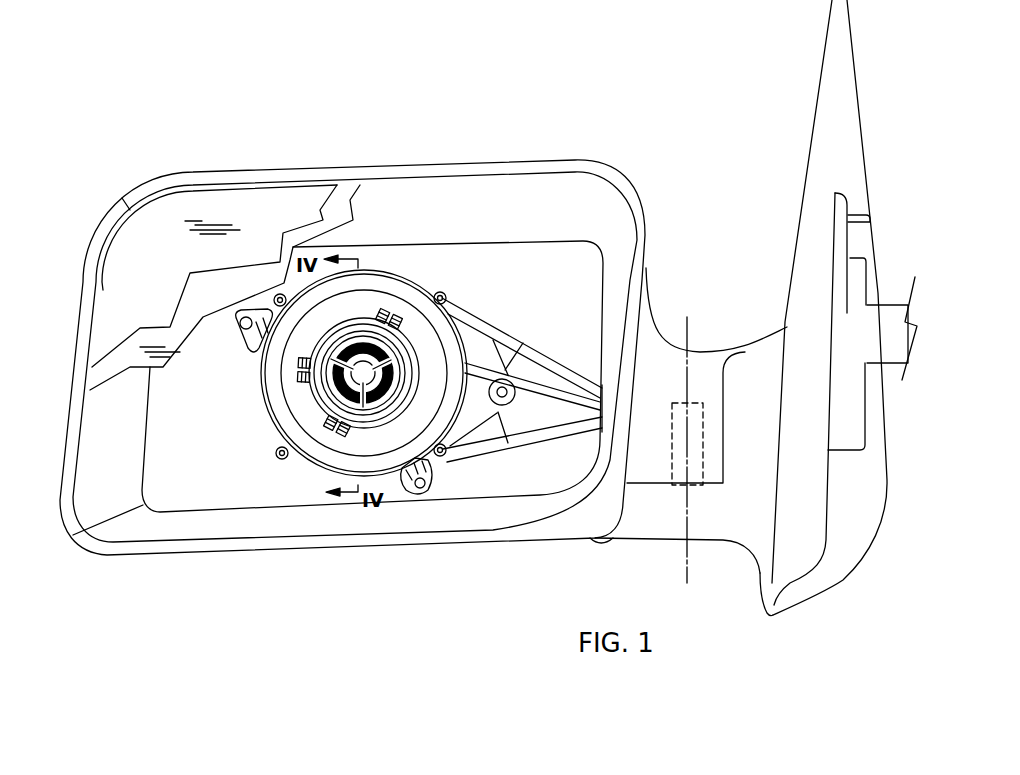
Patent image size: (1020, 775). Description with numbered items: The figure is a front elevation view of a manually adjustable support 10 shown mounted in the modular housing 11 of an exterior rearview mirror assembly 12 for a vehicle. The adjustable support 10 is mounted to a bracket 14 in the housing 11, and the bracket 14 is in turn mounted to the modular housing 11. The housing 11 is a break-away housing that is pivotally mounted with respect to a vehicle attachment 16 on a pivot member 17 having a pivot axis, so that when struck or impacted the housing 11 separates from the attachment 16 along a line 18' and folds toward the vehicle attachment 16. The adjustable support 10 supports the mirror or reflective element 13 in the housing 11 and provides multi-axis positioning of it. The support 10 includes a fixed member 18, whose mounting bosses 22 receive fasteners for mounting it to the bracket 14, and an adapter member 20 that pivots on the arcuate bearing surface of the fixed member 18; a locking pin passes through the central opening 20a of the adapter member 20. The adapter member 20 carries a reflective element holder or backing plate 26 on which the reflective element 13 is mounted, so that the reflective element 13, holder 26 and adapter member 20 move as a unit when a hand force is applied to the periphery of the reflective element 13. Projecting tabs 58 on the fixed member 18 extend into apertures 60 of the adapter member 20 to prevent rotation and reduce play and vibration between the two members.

The adjustable support 10 is at (503, 275).
The modular housing 11 is at (511, 136).
The exterior rearview mirror assembly 12 is at (237, 136).
The reflective element 13 is at (308, 192).
The bracket 14 is at (513, 338).
The vehicle attachment 16 is at (815, 107).
The pivot member 17 is at (673, 462).
The fixed member 18 is at (453, 476).
The line 18' is at (688, 420).
The adapter member 20 is at (268, 407).
The central opening 20a is at (375, 377).
The mounting bosses 22 is at (408, 497).
The reflective element holder 26 is at (349, 196).
The projecting tabs 58 is at (344, 441).
The apertures 60 is at (382, 310).